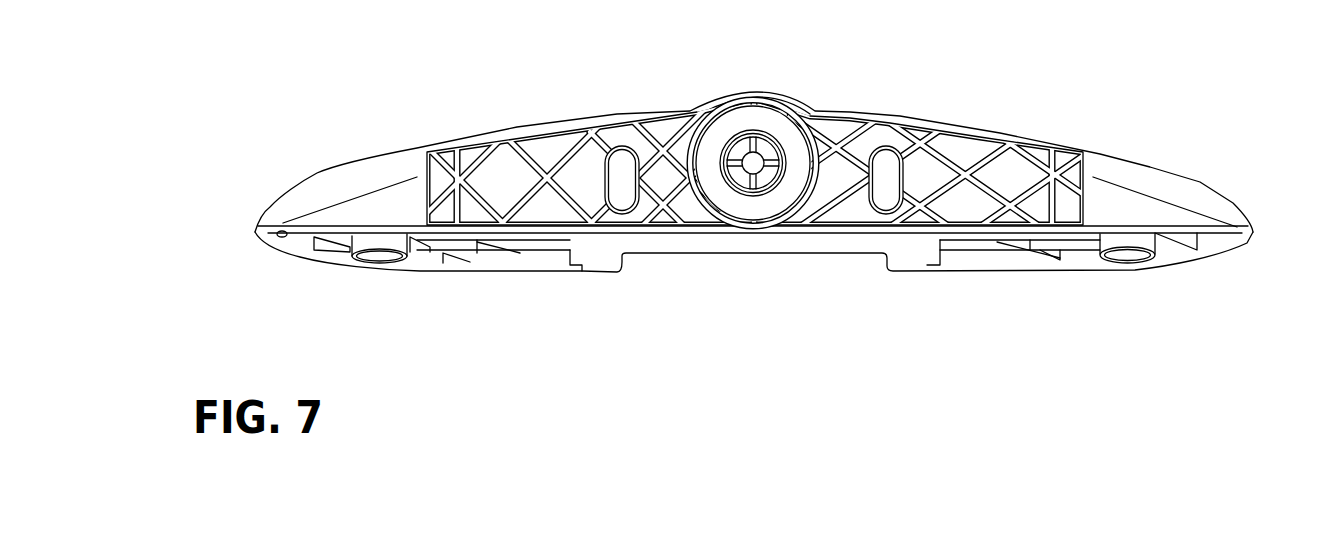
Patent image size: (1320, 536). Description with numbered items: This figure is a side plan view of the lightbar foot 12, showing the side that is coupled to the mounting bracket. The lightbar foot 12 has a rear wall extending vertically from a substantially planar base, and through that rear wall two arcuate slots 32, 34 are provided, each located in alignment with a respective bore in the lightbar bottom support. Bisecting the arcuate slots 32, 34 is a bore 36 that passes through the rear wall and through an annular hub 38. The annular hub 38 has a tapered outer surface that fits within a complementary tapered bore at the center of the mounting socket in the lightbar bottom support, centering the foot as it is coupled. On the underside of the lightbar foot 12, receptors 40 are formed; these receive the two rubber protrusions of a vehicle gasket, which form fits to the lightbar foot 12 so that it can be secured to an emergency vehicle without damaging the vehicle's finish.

The lightbar foot 12 is at (318, 168).
The arcuate slot 32 is at (902, 212).
The arcuate slot 34 is at (643, 212).
The bore 36 is at (772, 195).
The annular hub 38 is at (733, 127).
The receptor 40 is at (378, 262).